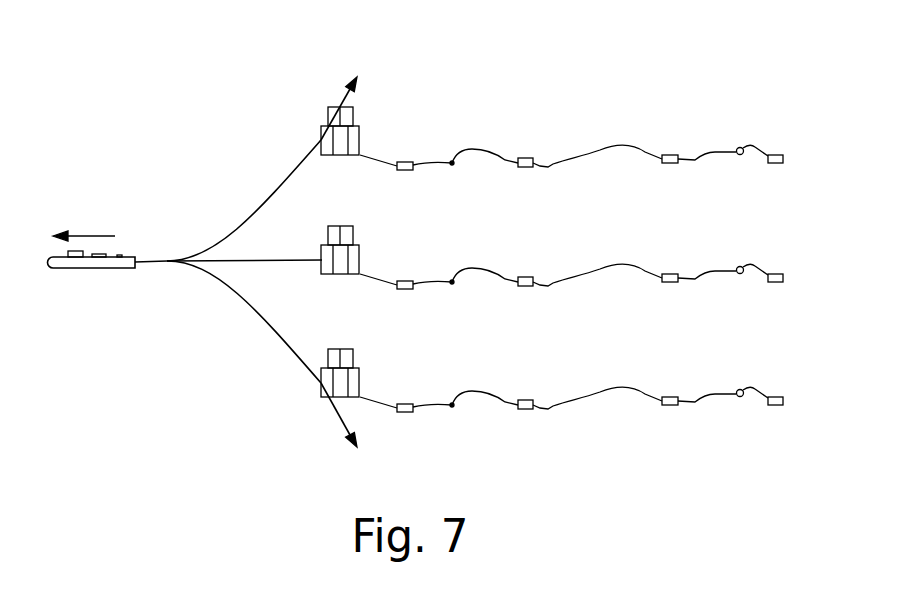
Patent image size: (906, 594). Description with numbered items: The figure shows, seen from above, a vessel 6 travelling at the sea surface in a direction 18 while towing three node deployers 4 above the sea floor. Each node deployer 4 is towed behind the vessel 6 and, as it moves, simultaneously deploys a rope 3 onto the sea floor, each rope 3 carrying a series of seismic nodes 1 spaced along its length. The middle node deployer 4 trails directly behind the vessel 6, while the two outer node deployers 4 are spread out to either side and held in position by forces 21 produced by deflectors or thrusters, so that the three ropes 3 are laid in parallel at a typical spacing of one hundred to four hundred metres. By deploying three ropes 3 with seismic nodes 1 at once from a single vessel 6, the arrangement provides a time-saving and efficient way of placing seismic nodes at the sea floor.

The seismic nodes 1 is at (530, 157).
The rope 3 is at (472, 149).
The node deployer 4 is at (355, 140).
The vessel 6 is at (93, 268).
The direction 18 is at (84, 222).
The forces 21 is at (349, 262).